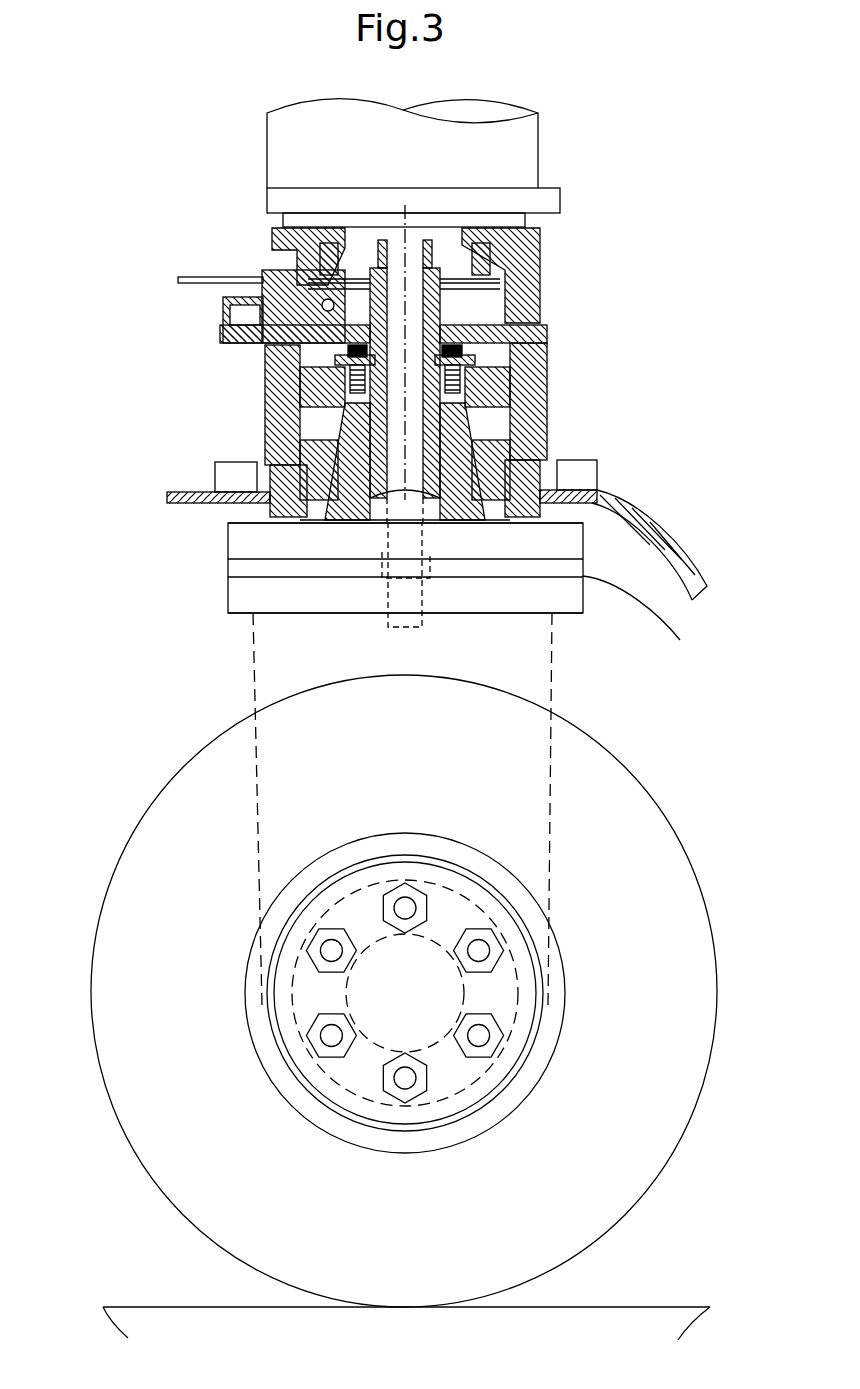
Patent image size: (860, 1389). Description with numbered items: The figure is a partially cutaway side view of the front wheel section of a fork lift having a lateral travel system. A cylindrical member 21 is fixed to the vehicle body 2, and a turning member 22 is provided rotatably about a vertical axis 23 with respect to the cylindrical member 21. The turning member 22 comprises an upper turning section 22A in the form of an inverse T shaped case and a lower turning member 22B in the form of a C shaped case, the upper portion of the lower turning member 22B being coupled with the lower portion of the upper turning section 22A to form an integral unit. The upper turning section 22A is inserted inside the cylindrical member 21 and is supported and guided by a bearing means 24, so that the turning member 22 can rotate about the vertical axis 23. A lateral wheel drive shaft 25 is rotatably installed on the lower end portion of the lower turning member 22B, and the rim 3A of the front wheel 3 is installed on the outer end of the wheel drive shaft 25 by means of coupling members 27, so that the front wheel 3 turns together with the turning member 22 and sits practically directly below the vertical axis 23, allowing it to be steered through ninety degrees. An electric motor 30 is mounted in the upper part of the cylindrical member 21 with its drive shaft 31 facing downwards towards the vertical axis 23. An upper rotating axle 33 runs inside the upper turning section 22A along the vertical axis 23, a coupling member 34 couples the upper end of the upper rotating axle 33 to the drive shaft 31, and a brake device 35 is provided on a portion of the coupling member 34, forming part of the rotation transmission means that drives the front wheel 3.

The vehicle body 2 is at (655, 545).
The front wheels 3 is at (620, 788).
The rims 3A is at (497, 988).
The cylindrical member 21 is at (527, 390).
The turning members 22 is at (147, 538).
The upper turning section 22A is at (245, 552).
The lower turning member 22B is at (245, 599).
The vertical axis 23 is at (465, 417).
The bearing means 24 is at (307, 395).
The wheel drive shaft 25 is at (532, 1045).
The coupling members 27 is at (404, 1103).
The electric motor 30 is at (523, 163).
The drive shaft 31 is at (425, 262).
The upper rotating axle 33 is at (412, 487).
The coupling member 34 is at (500, 337).
The brake device 35 is at (533, 323).